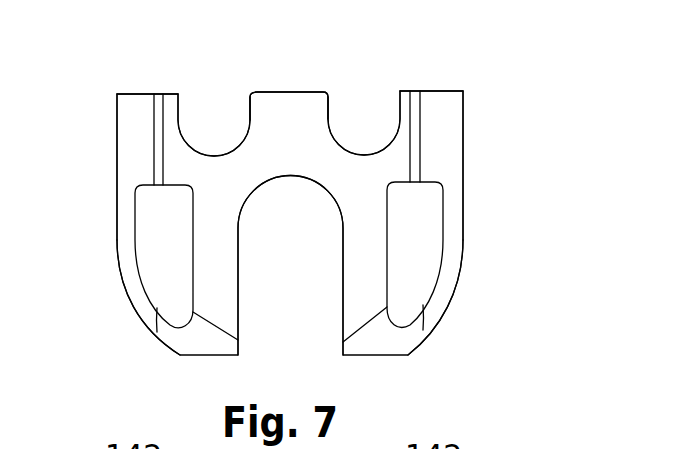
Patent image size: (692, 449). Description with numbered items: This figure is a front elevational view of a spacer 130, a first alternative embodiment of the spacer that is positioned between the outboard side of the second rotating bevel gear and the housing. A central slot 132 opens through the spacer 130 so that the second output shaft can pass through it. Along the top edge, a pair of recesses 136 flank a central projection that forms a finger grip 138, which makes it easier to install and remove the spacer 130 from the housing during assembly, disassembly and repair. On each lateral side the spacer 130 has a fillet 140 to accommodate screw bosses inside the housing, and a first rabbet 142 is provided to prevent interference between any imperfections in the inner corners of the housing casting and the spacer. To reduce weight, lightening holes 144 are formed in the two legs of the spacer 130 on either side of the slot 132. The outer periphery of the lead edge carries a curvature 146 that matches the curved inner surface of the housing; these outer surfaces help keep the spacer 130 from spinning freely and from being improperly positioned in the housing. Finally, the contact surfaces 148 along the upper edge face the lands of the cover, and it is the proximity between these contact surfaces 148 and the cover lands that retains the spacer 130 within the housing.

The spacer 130 is at (492, 90).
The slot 132 is at (322, 268).
The recesses 136 is at (220, 156).
The finger grip 138 is at (293, 92).
The fillet 140 is at (135, 126).
The first rabbet 142 is at (157, 93).
The lightening holes 144 is at (158, 227).
The curvature 146 is at (128, 297).
The contact surfaces 148 is at (125, 93).